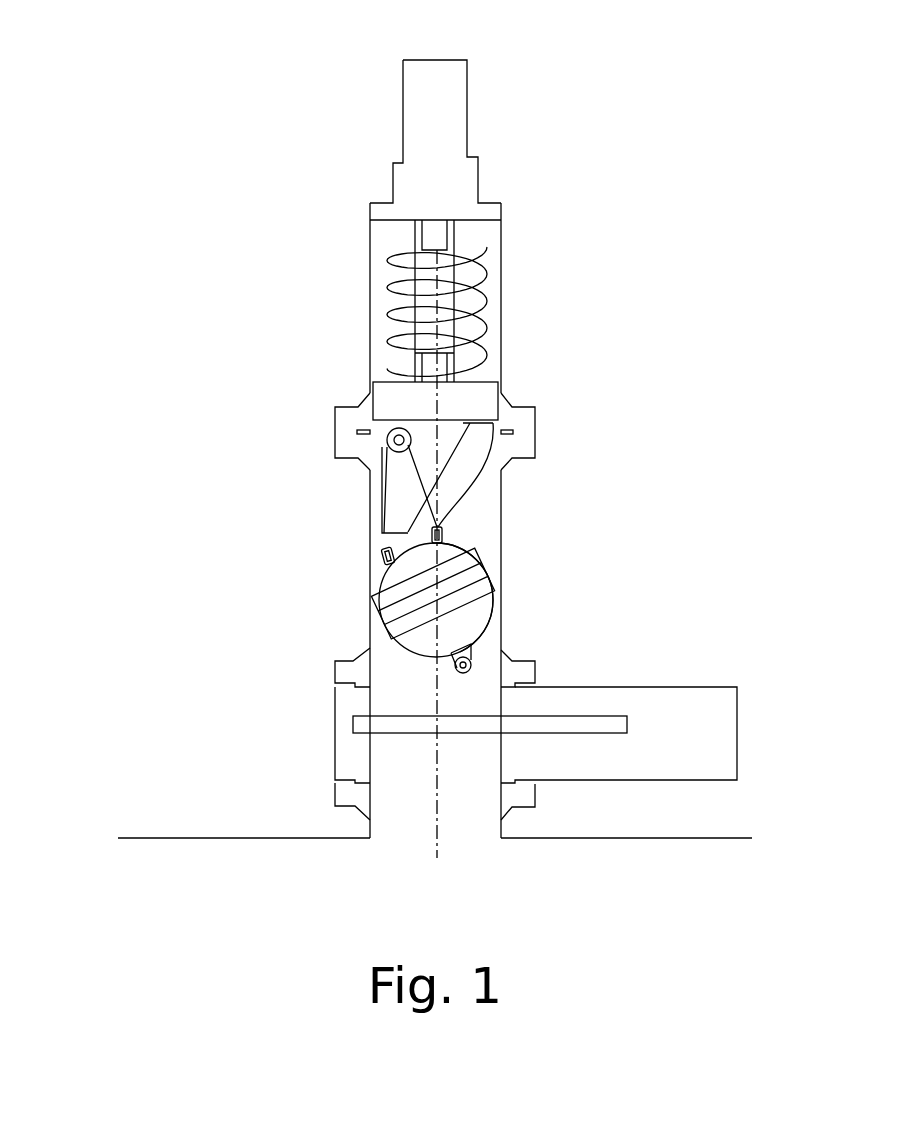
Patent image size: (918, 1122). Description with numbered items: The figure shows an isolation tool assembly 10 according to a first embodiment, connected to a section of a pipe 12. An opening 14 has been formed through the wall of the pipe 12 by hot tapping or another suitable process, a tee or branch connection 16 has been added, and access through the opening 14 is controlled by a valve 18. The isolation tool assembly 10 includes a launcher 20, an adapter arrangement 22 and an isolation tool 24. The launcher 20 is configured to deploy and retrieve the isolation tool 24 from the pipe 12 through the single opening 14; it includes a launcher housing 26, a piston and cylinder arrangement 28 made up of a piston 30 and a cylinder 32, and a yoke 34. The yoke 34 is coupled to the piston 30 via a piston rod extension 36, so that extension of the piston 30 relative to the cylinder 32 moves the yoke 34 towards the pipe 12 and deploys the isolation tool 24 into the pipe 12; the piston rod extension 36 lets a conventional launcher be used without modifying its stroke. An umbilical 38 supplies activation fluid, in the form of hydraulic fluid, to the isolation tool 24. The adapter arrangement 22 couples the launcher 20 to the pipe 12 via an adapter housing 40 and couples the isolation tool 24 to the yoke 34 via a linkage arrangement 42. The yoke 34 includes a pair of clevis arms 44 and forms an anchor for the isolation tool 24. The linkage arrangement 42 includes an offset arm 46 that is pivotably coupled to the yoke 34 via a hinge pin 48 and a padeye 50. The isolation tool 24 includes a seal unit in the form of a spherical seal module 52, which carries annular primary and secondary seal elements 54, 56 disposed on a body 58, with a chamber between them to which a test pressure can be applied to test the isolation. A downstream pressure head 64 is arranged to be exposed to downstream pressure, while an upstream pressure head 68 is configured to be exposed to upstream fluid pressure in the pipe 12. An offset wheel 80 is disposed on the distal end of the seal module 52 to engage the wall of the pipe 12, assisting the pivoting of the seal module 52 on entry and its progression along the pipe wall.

The isolation tool assembly 10 is at (205, 328).
The pipe 12 is at (182, 838).
The opening 14 is at (430, 838).
The tee or branch connection 16 is at (335, 795).
The valve 18 is at (335, 712).
The launcher 20 is at (317, 260).
The adapter arrangement 22 is at (347, 537).
The isolation tool 24 is at (345, 612).
The launcher housing 26 is at (535, 412).
The piston and cylinder arrangement 28 is at (347, 155).
The piston 30 is at (440, 233).
The cylinder 32 is at (480, 158).
The yoke 34 is at (500, 385).
The piston rod extension 36 is at (483, 298).
The umbilical 38 is at (495, 268).
The adapter housing 40 is at (537, 669).
The linkage arrangement 42 is at (383, 493).
The clevis arms 44 is at (435, 438).
The offset arm 46 is at (392, 552).
The hinge pin 48 is at (392, 433).
The padeye 50 is at (390, 441).
The spherical seal module 52 is at (377, 587).
The primary seal element 54 is at (482, 563).
The secondary seal element 56 is at (497, 588).
The body 58 is at (490, 578).
The downstream pressure head 64 is at (493, 617).
The upstream pressure head 68 is at (443, 543).
The offset wheel 80 is at (472, 662).